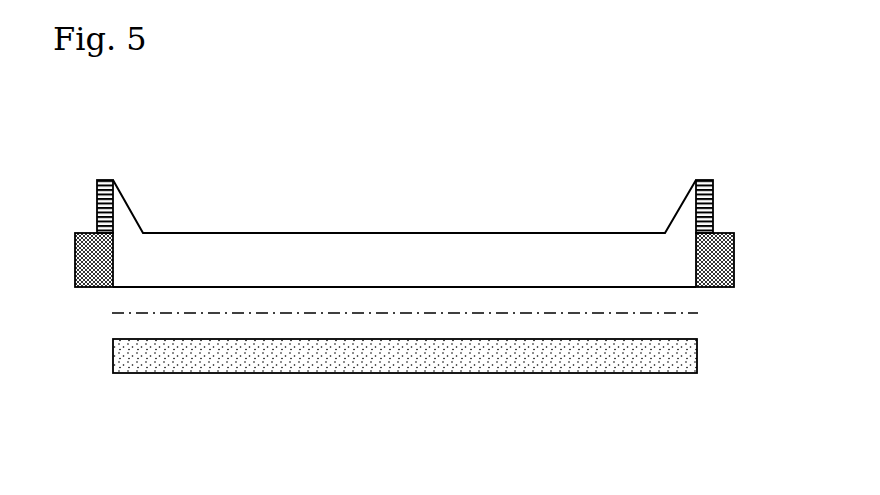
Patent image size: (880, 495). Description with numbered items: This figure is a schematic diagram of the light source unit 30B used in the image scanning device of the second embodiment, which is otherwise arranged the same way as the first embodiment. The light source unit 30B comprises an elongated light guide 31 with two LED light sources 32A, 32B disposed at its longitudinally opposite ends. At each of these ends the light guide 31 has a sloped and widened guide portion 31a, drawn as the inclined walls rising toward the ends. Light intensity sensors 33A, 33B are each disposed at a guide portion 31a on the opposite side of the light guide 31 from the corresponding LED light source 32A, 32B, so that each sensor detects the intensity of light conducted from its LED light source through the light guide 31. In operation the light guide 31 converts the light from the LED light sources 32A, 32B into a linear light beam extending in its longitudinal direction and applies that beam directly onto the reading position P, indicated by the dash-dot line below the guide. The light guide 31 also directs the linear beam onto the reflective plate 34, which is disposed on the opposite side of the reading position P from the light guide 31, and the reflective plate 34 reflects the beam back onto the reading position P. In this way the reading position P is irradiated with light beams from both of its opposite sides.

The light guide 31 is at (356, 246).
The guide portion 31a is at (132, 208).
The light source unit 30B is at (456, 229).
The light intensity sensor 33A is at (712, 207).
The light intensity sensor 33B is at (102, 208).
The LED light source 32A is at (78, 258).
The LED light source 32B is at (730, 258).
The reflective plate 34 is at (222, 362).
The reading position P is at (458, 313).